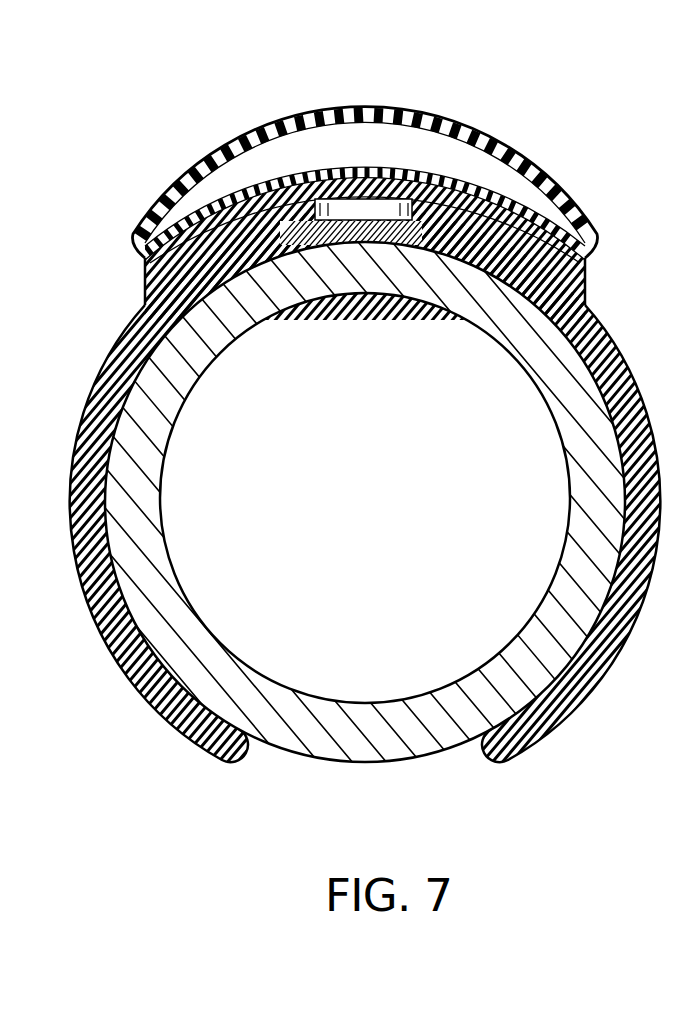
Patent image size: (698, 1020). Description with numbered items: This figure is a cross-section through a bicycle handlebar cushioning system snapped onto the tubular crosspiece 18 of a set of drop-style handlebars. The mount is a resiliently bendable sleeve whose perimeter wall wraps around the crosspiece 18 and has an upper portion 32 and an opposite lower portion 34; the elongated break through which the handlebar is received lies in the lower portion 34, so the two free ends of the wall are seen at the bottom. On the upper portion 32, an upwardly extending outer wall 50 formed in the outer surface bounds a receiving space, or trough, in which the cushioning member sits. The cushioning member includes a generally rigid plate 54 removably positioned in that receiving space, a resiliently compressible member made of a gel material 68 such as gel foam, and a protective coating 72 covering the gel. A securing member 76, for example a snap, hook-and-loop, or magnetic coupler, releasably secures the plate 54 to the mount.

The crosspiece 18 is at (384, 764).
The upper portion 32 is at (597, 306).
The lower portion 34 is at (244, 780).
The outer wall 50 is at (143, 282).
The plate 54 is at (212, 148).
The gel material 68 is at (417, 150).
The protective coating 72 is at (538, 150).
The securing member 76 is at (367, 240).